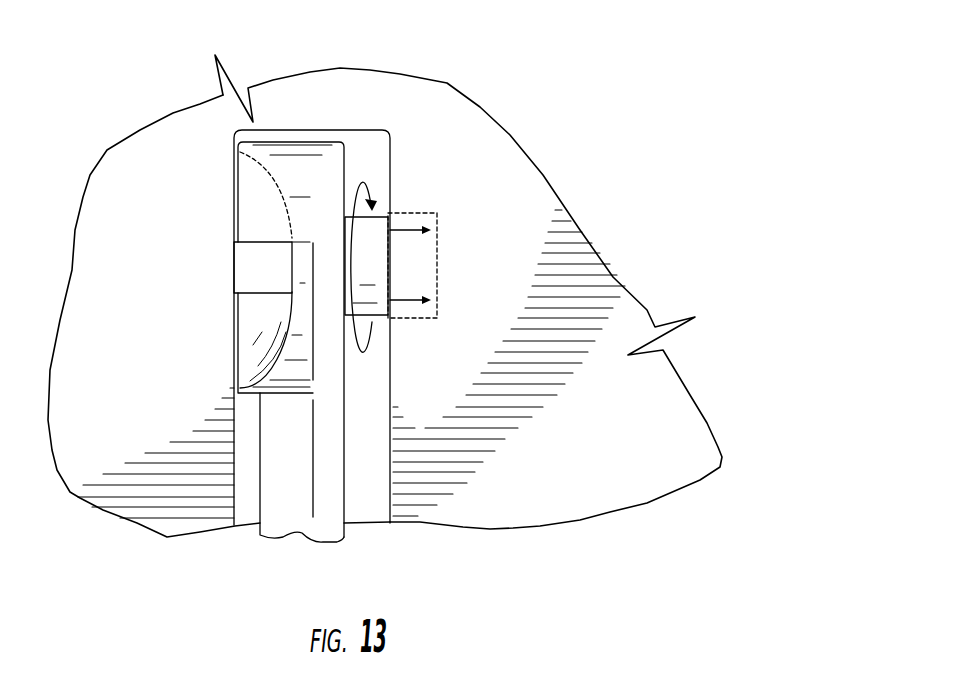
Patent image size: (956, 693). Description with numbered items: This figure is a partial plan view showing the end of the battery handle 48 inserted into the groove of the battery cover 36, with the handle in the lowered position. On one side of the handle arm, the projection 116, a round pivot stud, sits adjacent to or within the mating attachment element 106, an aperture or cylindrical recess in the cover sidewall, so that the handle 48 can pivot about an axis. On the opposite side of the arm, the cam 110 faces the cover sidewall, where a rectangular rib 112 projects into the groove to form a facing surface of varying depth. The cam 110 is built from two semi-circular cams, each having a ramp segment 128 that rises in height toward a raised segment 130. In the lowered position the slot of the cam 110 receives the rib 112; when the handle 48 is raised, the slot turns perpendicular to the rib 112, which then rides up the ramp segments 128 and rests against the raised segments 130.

The battery cover 36 is at (567, 282).
The handle 48 is at (285, 492).
The mating attachment element 106 is at (430, 253).
The cam 110 is at (300, 165).
The rib 112 is at (250, 270).
The projection 116 is at (375, 230).
The ramp segment 128 is at (253, 330).
The raised segment 130 is at (257, 192).